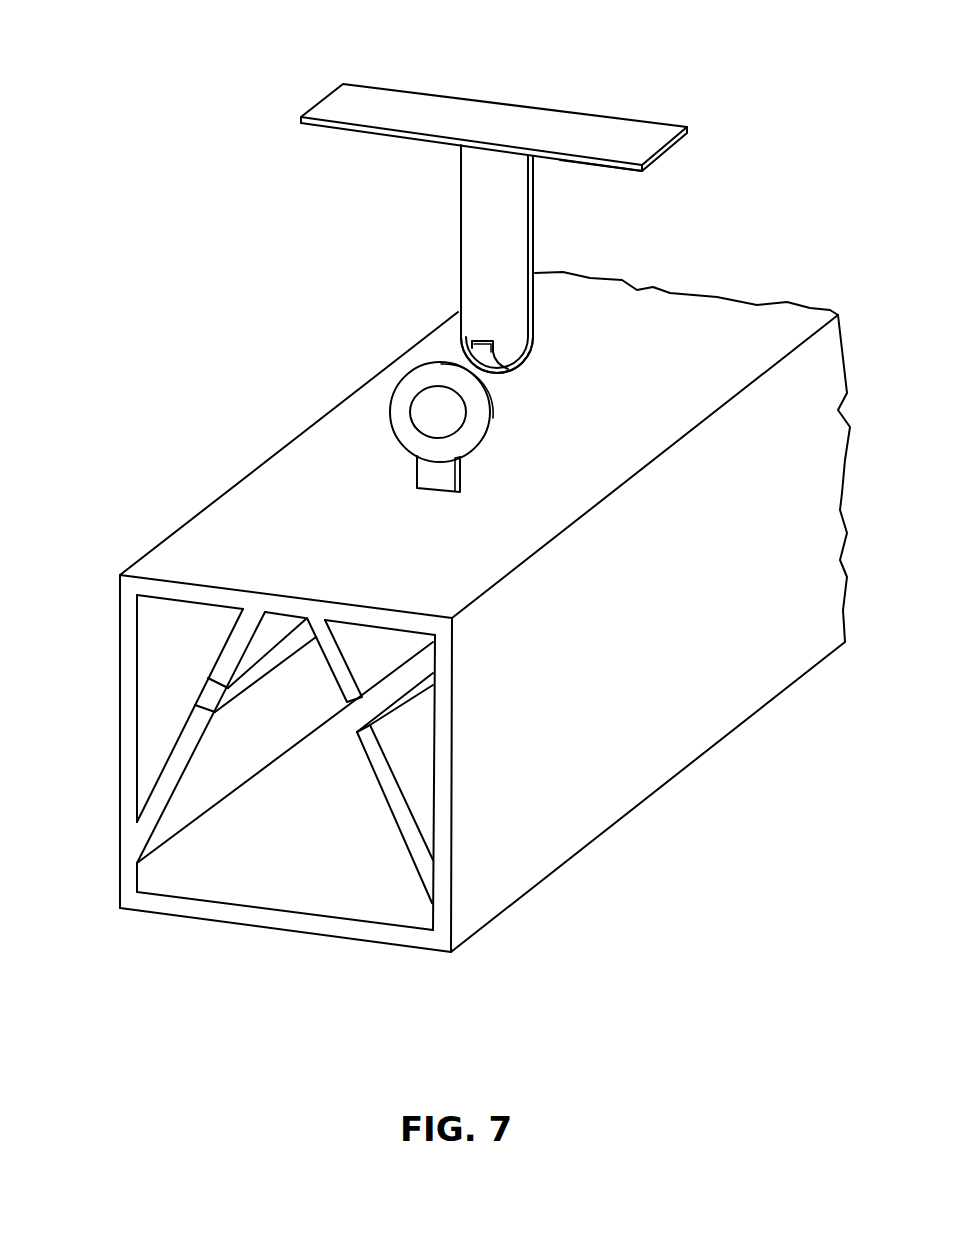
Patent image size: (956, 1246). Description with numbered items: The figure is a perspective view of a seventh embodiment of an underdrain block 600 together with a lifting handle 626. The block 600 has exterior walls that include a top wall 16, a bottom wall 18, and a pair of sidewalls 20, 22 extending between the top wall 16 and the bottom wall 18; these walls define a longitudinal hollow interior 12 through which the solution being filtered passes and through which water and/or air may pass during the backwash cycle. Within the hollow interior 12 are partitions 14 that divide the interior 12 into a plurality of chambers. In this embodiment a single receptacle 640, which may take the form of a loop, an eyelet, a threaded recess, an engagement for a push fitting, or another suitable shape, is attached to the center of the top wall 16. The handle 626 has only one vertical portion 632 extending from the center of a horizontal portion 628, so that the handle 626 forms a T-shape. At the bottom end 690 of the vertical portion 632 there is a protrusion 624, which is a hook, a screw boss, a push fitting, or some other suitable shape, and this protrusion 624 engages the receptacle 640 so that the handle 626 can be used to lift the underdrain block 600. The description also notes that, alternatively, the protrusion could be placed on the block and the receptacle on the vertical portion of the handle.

The underdrain block 600 is at (270, 99).
The horizontal portion 628 is at (418, 100).
The vertical portion 632 is at (488, 212).
The protrusion 624 is at (449, 338).
The handle 626 is at (594, 176).
The bottom end 690 is at (502, 316).
The receptacle 640 is at (386, 430).
The top wall 16 is at (345, 607).
The sidewall 22 is at (127, 750).
The bottom wall 18 is at (273, 918).
The sidewall 20 is at (448, 777).
The hollow interior 12 is at (285, 741).
The partitions 14 is at (175, 772).